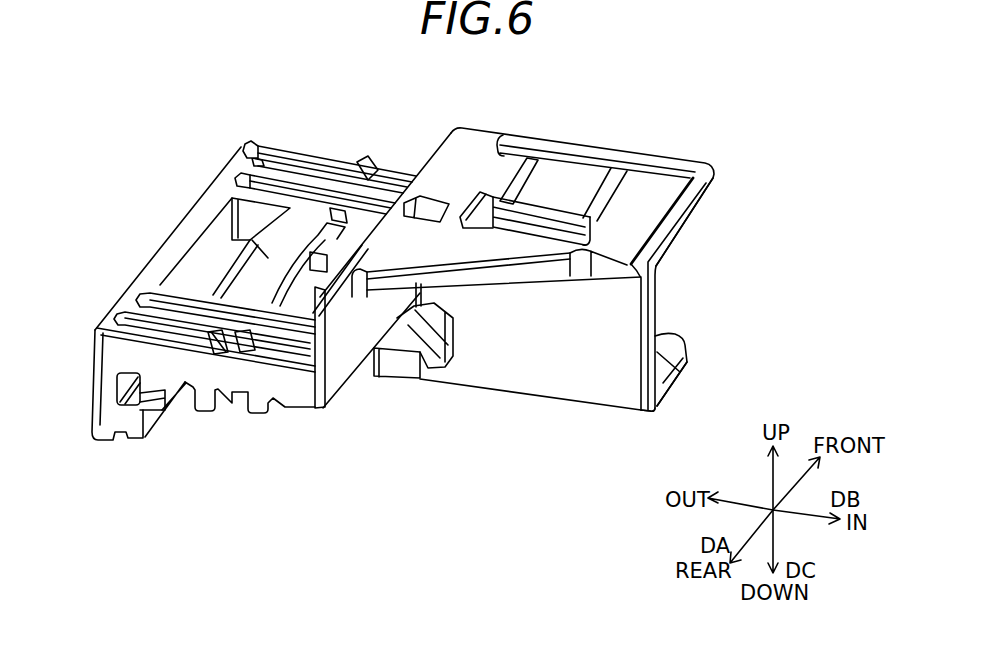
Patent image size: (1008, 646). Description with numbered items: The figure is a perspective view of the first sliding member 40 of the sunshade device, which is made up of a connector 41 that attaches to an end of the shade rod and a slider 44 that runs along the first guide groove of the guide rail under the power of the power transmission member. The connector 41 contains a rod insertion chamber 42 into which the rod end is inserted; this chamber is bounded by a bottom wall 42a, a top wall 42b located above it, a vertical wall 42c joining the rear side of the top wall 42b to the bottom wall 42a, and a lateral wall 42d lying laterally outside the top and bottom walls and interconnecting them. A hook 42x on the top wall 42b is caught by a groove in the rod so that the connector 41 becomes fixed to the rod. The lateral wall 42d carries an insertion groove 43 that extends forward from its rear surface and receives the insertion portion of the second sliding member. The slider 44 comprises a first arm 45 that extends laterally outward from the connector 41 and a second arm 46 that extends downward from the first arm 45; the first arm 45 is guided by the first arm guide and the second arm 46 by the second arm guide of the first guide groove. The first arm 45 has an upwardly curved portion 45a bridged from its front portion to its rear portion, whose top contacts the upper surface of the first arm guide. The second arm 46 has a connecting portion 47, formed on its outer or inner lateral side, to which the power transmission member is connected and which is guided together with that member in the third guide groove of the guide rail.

The first sliding member 40 is at (745, 113).
The connector 41 is at (478, 144).
The rod insertion chamber 42 is at (673, 303).
The bottom wall 42a is at (678, 382).
The top wall 42b is at (695, 219).
The vertical wall 42c is at (680, 370).
The lateral wall 42d is at (440, 389).
The hook 42x is at (581, 188).
The insertion groove 43 is at (443, 307).
The slider 44 is at (311, 154).
The first arm 45 is at (293, 397).
The curved portion 45a is at (232, 255).
The second arm 46 is at (106, 391).
The connecting portion 47 is at (128, 424).